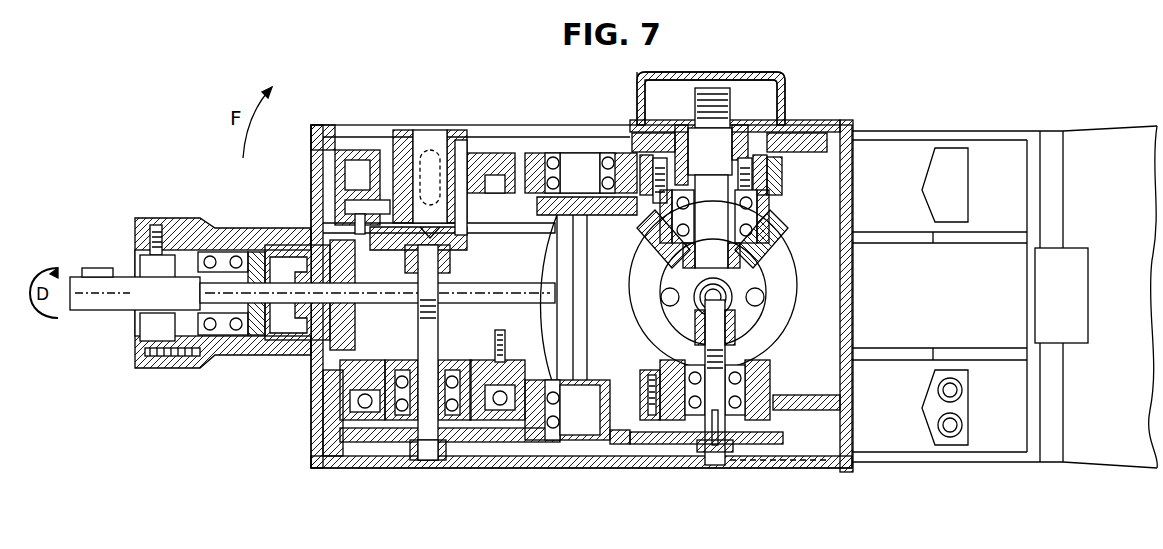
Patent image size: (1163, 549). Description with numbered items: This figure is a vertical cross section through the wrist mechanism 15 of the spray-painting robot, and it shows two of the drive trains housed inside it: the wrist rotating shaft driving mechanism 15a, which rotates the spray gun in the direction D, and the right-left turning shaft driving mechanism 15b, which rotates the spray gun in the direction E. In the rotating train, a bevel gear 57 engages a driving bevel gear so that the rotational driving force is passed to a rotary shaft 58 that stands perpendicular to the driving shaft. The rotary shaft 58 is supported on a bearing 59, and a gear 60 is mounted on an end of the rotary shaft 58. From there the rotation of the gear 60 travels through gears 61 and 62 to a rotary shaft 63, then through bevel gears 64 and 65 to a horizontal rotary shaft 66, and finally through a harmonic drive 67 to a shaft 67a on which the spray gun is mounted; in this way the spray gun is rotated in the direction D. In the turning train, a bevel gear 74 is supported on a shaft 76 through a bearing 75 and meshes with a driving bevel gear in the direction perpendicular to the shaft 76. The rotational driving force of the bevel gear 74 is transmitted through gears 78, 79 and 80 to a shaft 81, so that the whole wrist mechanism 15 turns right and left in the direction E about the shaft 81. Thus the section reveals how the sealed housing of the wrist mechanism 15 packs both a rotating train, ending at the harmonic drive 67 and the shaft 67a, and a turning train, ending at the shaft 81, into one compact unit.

The wrist mechanism 15 is at (396, 101).
The wrist rotating shaft driving mechanism 15a is at (637, 455).
The right-left turning shaft driving mechanism 15b is at (514, 150).
The bevel gear 57 is at (733, 305).
The rotary shaft 58 is at (713, 460).
The bearing 59 is at (768, 396).
The gear 60 is at (660, 446).
The gear 61 is at (537, 445).
The gear 62 is at (480, 442).
The rotary shaft 63 is at (430, 462).
The bevel gear 64 is at (330, 372).
The bevel gear 65 is at (445, 268).
The rotary shaft 66 is at (555, 293).
The harmonic drive 67 is at (258, 340).
The shaft 67a is at (100, 312).
The bevel gear 74 is at (775, 238).
The bearing 75 is at (765, 230).
The shaft 76 is at (713, 95).
The gear 78 is at (782, 175).
The gear 79 is at (620, 158).
The gear 80 is at (492, 160).
The shaft 81 is at (453, 128).